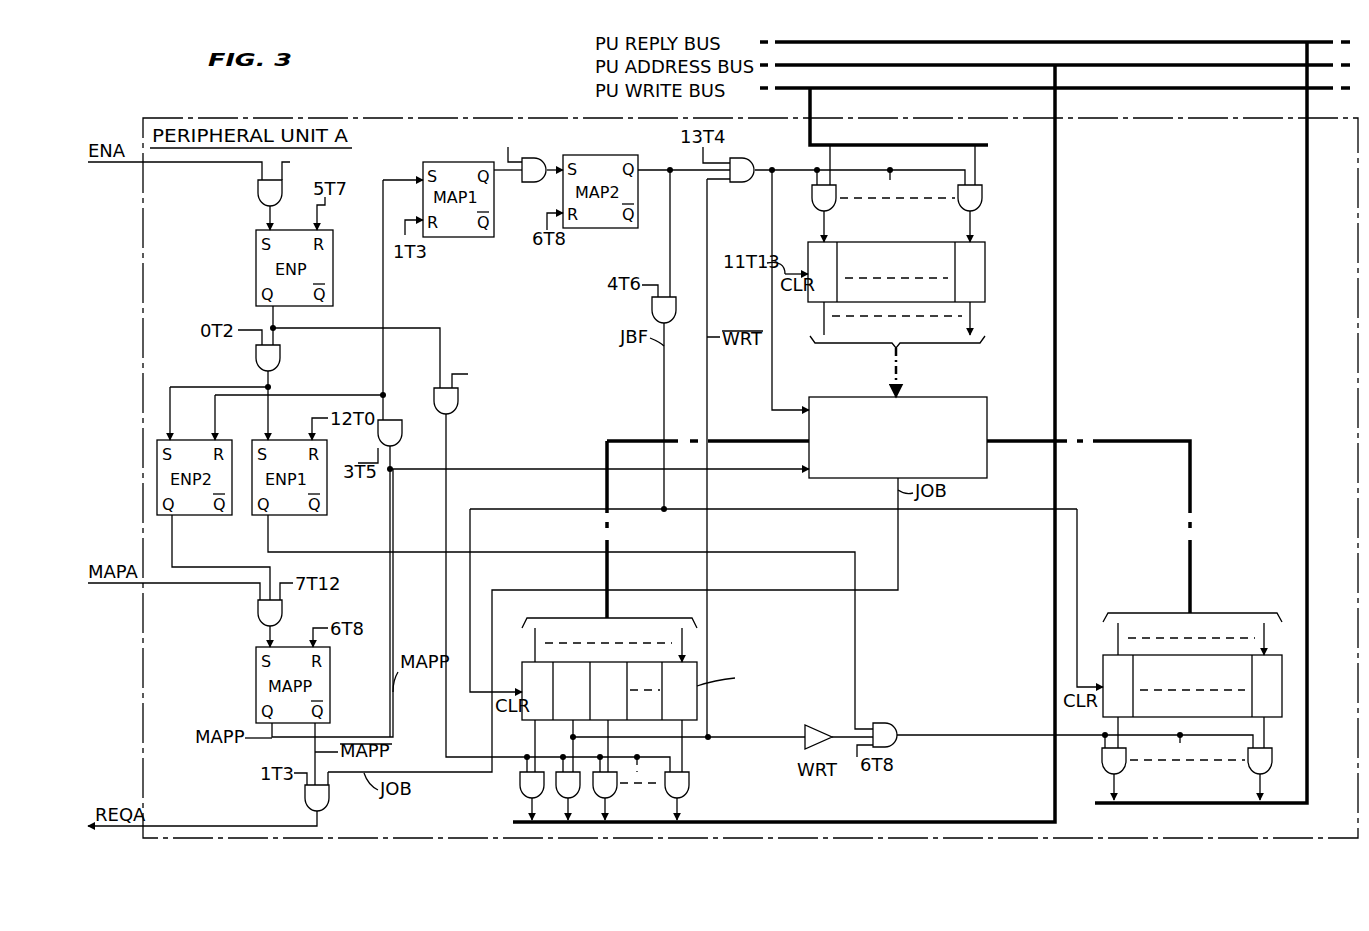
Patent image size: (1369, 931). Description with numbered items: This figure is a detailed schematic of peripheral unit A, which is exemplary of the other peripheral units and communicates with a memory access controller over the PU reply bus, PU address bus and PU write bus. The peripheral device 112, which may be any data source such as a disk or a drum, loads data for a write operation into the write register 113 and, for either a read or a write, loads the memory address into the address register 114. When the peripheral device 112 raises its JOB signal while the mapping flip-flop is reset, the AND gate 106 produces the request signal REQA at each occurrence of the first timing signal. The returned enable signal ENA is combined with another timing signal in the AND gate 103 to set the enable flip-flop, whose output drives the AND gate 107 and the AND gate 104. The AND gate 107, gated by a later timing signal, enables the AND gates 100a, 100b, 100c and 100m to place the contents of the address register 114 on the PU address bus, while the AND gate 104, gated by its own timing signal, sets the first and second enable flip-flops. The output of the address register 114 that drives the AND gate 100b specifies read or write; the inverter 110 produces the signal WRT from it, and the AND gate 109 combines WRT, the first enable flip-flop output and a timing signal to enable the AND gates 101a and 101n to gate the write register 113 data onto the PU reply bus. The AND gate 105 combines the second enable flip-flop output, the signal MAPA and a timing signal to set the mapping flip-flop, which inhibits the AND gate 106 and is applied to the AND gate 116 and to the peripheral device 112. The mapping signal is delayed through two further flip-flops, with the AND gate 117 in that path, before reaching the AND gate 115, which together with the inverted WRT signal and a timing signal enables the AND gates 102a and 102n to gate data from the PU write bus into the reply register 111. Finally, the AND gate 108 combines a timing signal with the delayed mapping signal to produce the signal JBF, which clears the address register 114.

The AND gate 100a is at (520, 782).
The AND gate 100b is at (558, 790).
The AND gate 100c is at (610, 795).
The AND gate 100m is at (688, 795).
The AND gate 101a is at (1102, 763).
The AND gate 101n is at (1248, 768).
The AND gate 102a is at (832, 208).
The AND gate 102n is at (978, 208).
The AND gate 103 is at (258, 192).
The AND gate 104 is at (282, 358).
The AND gate 105 is at (258, 616).
The AND gate 106 is at (305, 800).
The AND gate 107 is at (458, 400).
The AND gate 108 is at (687, 296).
The AND gate 109 is at (892, 723).
The inverter 110 is at (806, 725).
The reply register 111 is at (985, 257).
The peripheral device 112 is at (967, 397).
The write register 113 is at (1103, 665).
The address register 114 is at (522, 668).
The AND gate 115 is at (742, 183).
The AND gate 116 is at (402, 432).
The AND gate 117 is at (535, 182).